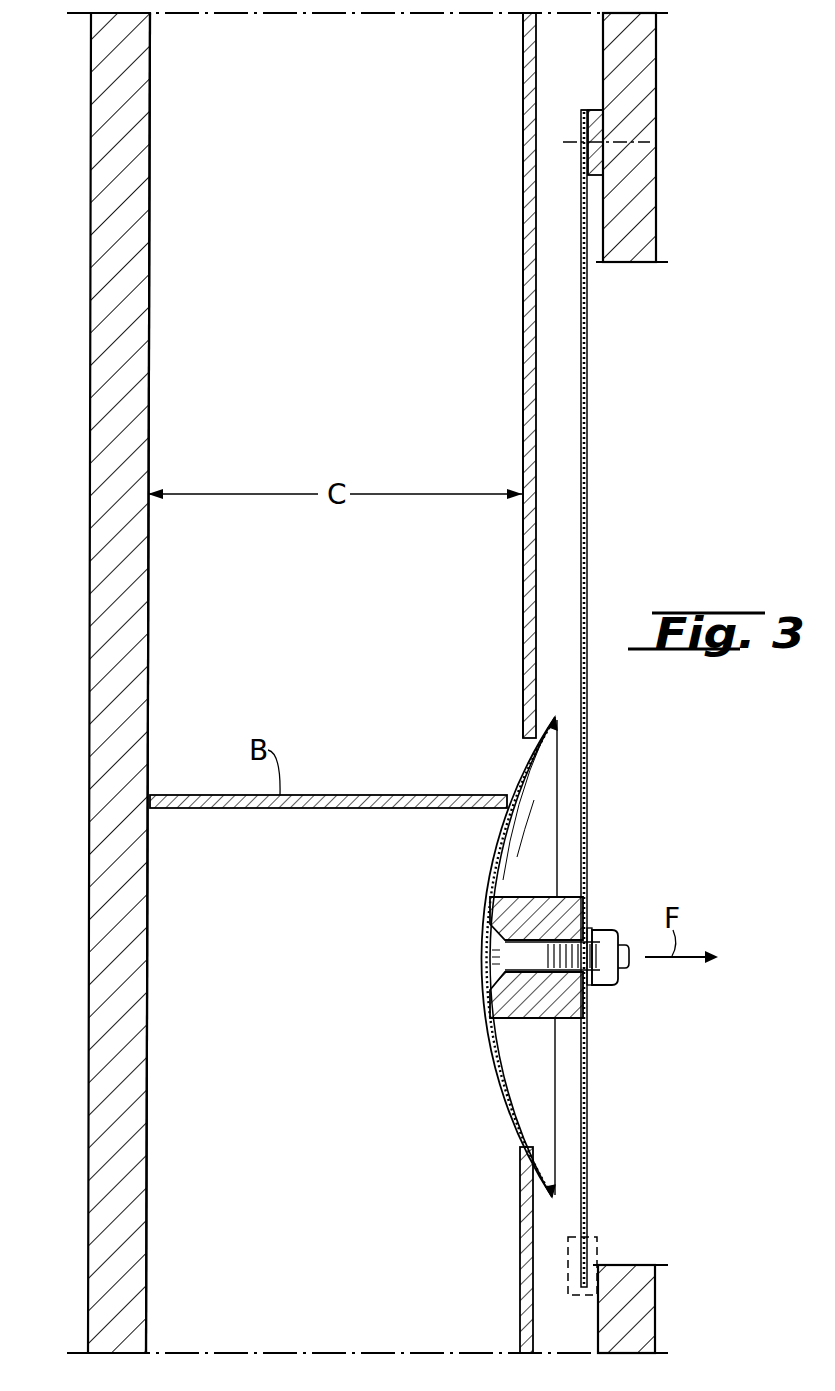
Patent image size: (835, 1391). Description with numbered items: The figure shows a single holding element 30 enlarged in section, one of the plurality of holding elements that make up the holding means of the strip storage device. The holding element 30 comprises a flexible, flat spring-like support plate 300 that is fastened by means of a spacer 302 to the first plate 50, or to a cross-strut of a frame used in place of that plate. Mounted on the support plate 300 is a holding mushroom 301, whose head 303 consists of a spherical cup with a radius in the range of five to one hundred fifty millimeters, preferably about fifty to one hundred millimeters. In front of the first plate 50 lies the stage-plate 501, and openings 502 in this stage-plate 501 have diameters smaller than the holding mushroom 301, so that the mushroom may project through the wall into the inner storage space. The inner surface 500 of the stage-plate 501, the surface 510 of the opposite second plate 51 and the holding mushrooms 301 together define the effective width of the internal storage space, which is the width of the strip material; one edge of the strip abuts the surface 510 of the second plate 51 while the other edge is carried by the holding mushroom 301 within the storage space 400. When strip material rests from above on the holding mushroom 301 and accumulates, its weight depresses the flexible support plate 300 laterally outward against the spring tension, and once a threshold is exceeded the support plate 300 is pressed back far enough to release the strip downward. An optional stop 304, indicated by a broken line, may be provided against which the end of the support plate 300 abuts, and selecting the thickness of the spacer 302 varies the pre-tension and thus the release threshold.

The holding element 30 is at (596, 786).
The first plate 50 is at (642, 215).
The second plate 51 is at (108, 362).
The support plate 300 is at (587, 528).
The holding mushroom 301 is at (477, 1013).
The spacer 302 is at (597, 108).
The head 303 is at (490, 852).
The stop 304 is at (568, 1262).
The chamber 400 is at (355, 313).
The inner surface 500 is at (524, 218).
The stage-plate 501 is at (530, 375).
The openings 502 is at (522, 745).
The surface 510 is at (150, 229).